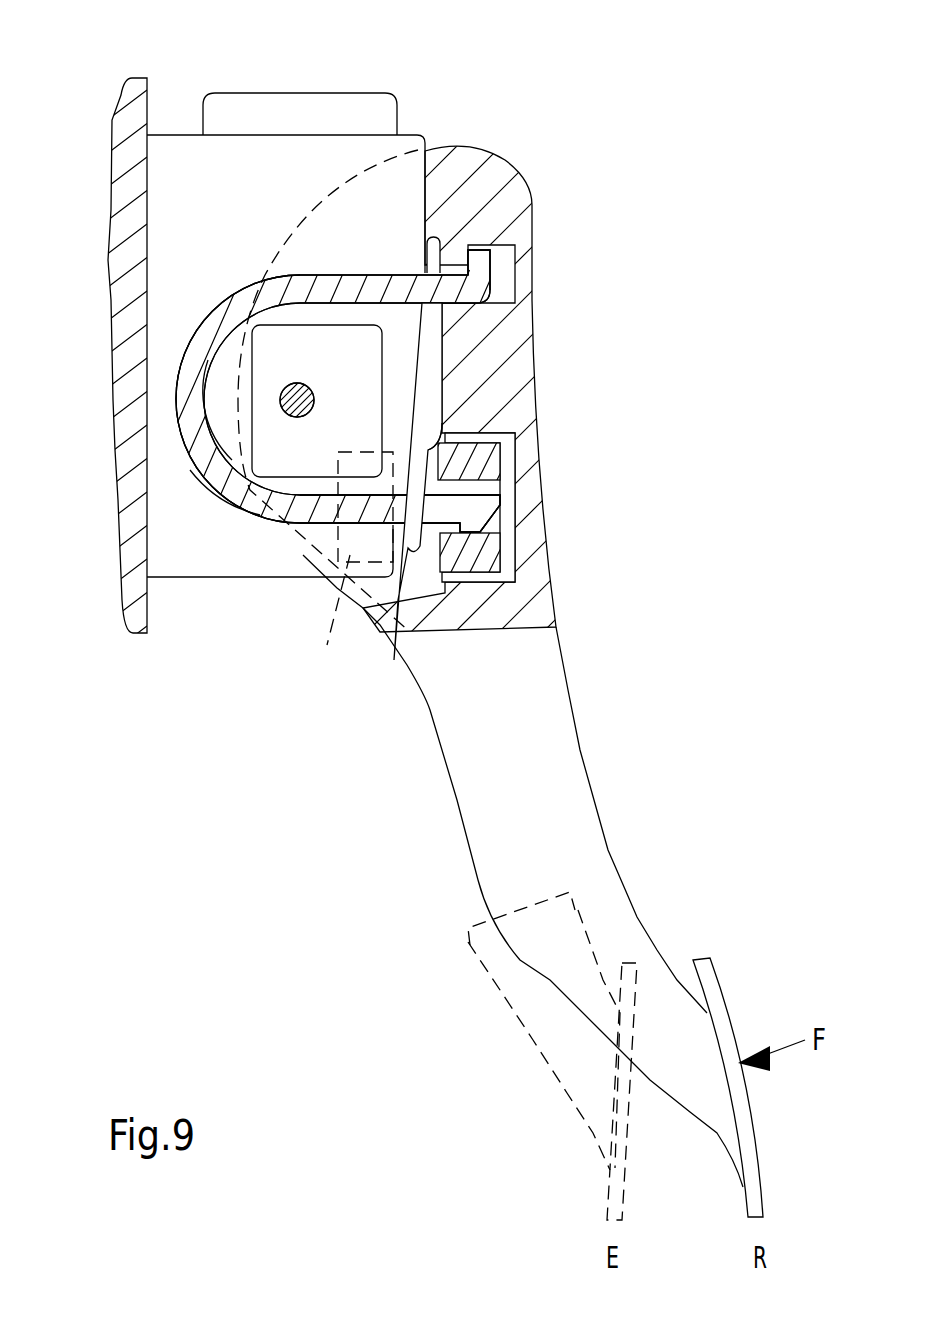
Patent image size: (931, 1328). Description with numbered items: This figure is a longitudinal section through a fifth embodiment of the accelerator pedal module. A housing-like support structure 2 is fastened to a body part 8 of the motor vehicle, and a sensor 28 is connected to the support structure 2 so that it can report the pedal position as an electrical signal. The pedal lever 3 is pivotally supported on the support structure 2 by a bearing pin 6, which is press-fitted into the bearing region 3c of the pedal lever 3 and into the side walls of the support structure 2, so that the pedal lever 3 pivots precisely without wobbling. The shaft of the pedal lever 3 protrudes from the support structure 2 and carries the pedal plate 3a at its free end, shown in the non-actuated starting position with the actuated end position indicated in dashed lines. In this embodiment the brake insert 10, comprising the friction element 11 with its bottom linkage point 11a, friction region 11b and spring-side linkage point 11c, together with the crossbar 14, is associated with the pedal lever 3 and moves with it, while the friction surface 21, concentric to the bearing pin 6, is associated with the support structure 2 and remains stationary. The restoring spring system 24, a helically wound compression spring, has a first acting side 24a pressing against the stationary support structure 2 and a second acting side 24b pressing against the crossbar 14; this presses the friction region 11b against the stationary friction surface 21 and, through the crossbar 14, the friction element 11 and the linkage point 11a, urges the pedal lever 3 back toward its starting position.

The support structure 2 is at (176, 150).
The sensor 28 is at (305, 100).
The body part 8 is at (118, 183).
The bearing pin 6 is at (280, 393).
The friction element 11 is at (252, 507).
The bottom linkage point 11a is at (493, 272).
The friction region 11b is at (187, 410).
The spring-side linkage point 11c is at (497, 507).
The friction surface 21 is at (213, 442).
The brake insert 10 is at (213, 515).
The restoring spring system 24 is at (493, 477).
The first acting side 24a is at (345, 568).
The second acting side 24b is at (440, 435).
The bearing region 3c is at (512, 342).
The crossbar 14 is at (492, 458).
The pedal lever 3 is at (570, 763).
The pedal plate 3a is at (715, 998).